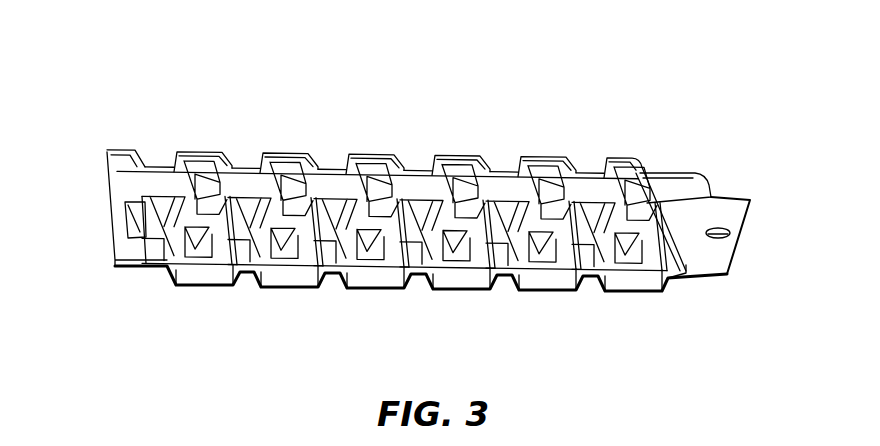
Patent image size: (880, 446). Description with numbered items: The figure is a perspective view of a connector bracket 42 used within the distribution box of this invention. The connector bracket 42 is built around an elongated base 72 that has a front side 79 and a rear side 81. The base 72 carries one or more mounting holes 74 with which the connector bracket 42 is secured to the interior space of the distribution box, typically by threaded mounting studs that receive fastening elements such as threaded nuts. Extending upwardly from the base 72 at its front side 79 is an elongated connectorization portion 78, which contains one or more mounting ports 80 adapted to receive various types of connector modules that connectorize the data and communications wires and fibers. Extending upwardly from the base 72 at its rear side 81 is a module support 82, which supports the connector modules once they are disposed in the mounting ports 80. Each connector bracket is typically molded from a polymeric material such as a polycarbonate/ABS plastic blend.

The connector bracket 42 is at (706, 60).
The elongated base 72 is at (734, 202).
The mounting hole 74 is at (722, 232).
The connectorization portion 78 is at (86, 205).
The front side 79 is at (417, 296).
The mounting port 80 is at (194, 300).
The rear side 81 is at (639, 144).
The module support 82 is at (679, 175).